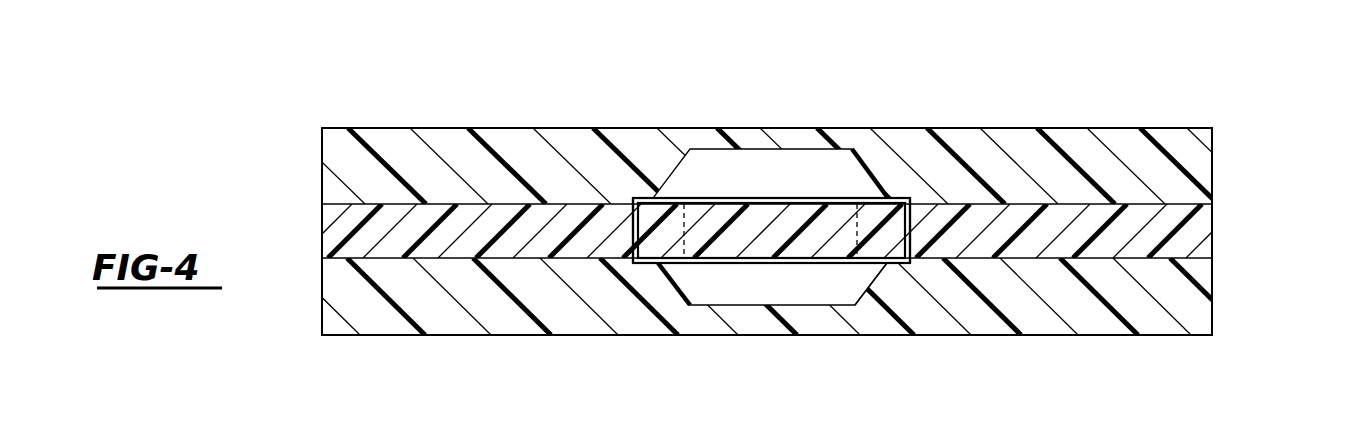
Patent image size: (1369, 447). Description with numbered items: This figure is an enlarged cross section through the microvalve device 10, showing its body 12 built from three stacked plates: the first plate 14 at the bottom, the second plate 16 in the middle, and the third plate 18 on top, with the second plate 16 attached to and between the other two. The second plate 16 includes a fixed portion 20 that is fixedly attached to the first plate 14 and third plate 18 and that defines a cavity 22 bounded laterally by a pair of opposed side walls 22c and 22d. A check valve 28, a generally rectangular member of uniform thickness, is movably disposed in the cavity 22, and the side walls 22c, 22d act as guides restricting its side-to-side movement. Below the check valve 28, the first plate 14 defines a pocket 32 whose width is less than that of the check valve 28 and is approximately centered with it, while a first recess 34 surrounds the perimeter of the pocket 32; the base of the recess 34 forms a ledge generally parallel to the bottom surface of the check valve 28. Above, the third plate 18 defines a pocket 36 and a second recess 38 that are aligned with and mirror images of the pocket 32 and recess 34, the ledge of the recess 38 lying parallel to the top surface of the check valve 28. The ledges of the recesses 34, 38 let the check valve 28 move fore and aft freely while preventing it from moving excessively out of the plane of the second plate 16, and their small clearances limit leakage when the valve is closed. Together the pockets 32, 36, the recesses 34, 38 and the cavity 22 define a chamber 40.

The microvalve device 10 is at (286, 142).
The body 12 is at (486, 116).
The first plate 14 is at (1215, 317).
The second plate 16 is at (1215, 223).
The third plate 18 is at (1215, 165).
The fixed portion 20 is at (1073, 200).
The cavity 22 is at (634, 263).
The side wall 22c is at (903, 197).
The side wall 22d is at (637, 218).
The check valve 28 is at (772, 198).
The pocket 32 is at (848, 293).
The first recess 34 is at (718, 262).
The pocket 36 is at (807, 160).
The second recess 38 is at (712, 198).
The chamber 40 is at (797, 297).